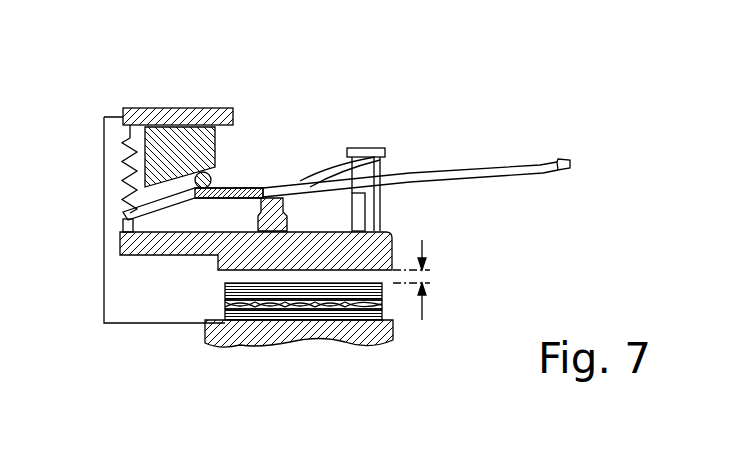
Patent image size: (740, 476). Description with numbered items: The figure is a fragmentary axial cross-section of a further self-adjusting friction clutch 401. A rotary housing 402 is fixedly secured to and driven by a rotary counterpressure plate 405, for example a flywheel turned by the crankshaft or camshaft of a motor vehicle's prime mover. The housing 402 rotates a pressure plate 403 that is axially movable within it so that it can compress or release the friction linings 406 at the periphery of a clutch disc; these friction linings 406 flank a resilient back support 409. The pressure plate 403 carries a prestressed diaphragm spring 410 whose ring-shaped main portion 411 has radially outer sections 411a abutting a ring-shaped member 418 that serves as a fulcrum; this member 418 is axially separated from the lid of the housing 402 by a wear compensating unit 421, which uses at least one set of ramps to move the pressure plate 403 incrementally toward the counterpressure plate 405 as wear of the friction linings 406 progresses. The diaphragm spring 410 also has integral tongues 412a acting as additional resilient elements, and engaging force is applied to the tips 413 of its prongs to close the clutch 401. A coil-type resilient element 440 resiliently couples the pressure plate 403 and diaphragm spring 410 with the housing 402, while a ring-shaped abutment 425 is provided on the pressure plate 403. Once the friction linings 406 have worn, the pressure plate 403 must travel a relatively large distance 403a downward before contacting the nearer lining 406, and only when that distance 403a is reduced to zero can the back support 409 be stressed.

The friction clutch 401 is at (150, 90).
The rotary housing 402 is at (177, 116).
The wear compensating unit 421 is at (195, 140).
The ring-shaped member 418 is at (212, 174).
The ring-shaped main portion 411 is at (252, 188).
The radially outer sections 411a is at (122, 212).
The tongues 412a is at (337, 173).
The ring-shaped abutment 425 is at (275, 188).
The prestressed diaphragm spring 410 is at (468, 173).
The tips of the prongs 413 is at (563, 157).
The pressure plate 403 is at (395, 230).
The distance 403a is at (432, 283).
The resilient element 440 is at (122, 183).
The friction linings 406 is at (225, 310).
The rotary counterpressure plate 405 is at (237, 336).
The resilient back support 409 is at (383, 302).